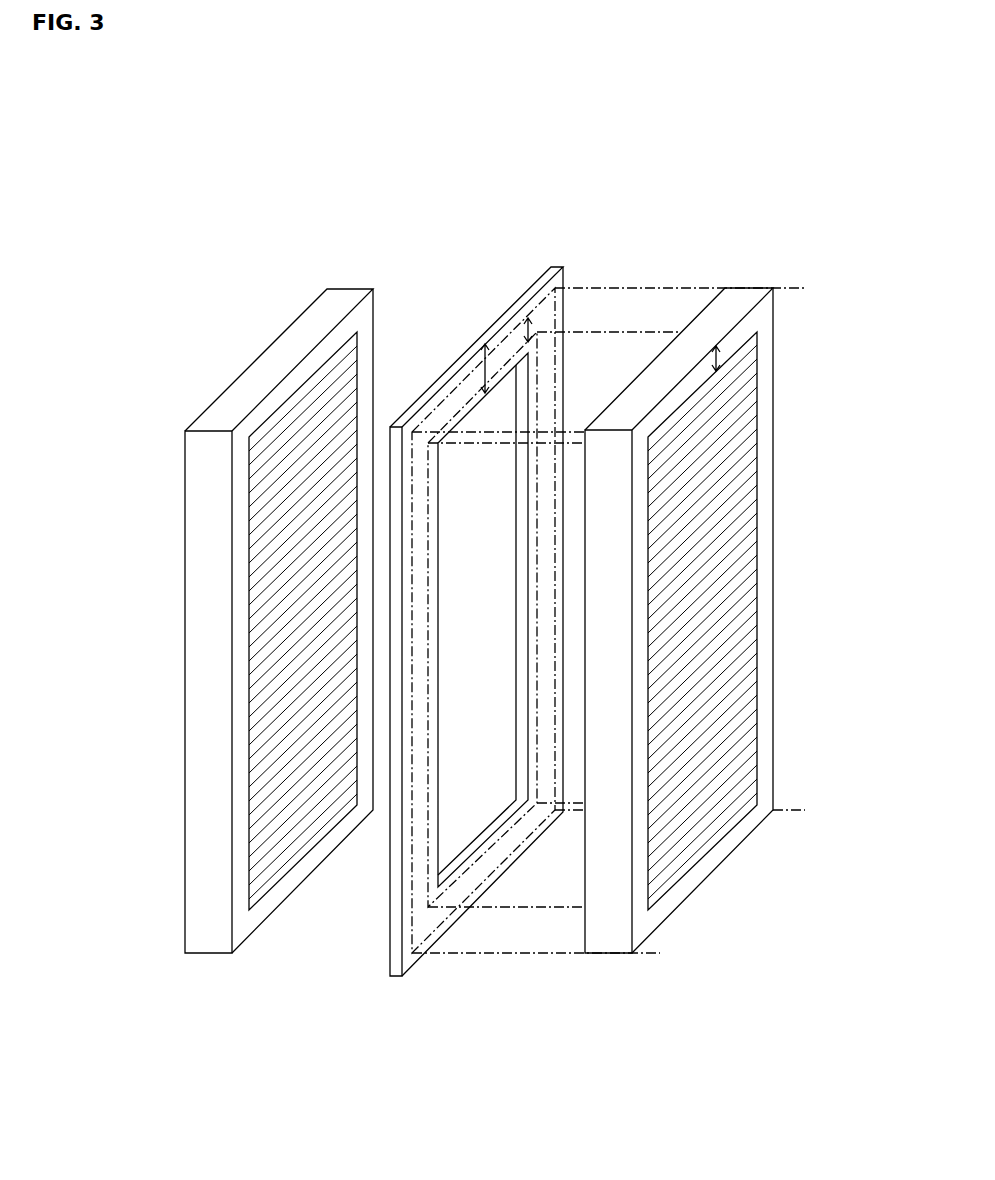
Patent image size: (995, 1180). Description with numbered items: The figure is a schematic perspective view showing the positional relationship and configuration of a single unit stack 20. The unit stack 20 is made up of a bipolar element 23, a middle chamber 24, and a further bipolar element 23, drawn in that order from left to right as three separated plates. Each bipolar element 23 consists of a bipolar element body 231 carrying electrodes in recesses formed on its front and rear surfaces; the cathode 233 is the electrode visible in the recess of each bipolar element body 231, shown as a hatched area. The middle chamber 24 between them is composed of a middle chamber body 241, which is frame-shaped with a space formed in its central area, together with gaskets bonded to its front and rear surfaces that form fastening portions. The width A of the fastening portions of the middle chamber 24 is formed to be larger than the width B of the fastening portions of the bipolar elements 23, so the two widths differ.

The unit stack 20 is at (432, 157).
The bipolar element 23 is at (333, 300).
The middle chamber 24 is at (558, 266).
The bipolar element body 231 is at (367, 386).
The cathode 233 is at (290, 767).
The middle chamber body 241 is at (547, 318).